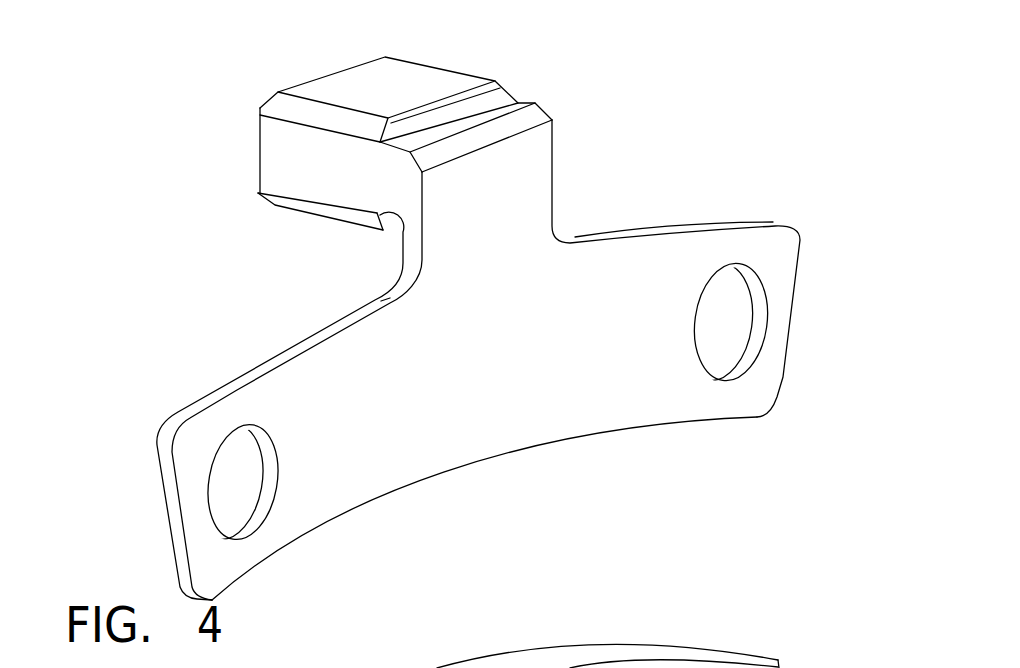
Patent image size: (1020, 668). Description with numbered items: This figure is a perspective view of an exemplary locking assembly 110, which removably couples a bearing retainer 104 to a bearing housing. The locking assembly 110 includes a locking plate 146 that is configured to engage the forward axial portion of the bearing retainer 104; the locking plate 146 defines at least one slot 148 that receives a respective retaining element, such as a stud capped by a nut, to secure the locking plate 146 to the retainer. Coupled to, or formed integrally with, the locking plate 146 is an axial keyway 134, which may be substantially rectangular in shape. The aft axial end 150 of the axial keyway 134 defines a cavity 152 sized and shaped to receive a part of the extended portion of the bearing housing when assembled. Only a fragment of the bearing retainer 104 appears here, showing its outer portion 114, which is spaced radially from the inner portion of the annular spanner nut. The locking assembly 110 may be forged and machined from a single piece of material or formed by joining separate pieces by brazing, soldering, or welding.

The locking assembly 110 is at (668, 95).
The aft axial end 150 is at (372, 73).
The cavity 152 is at (258, 134).
The axial keyway 134 is at (336, 172).
The locking plate 146 is at (509, 324).
The slot 148 is at (757, 325).
The bearing retainer 104 is at (722, 630).
The outer portion 114 is at (460, 667).